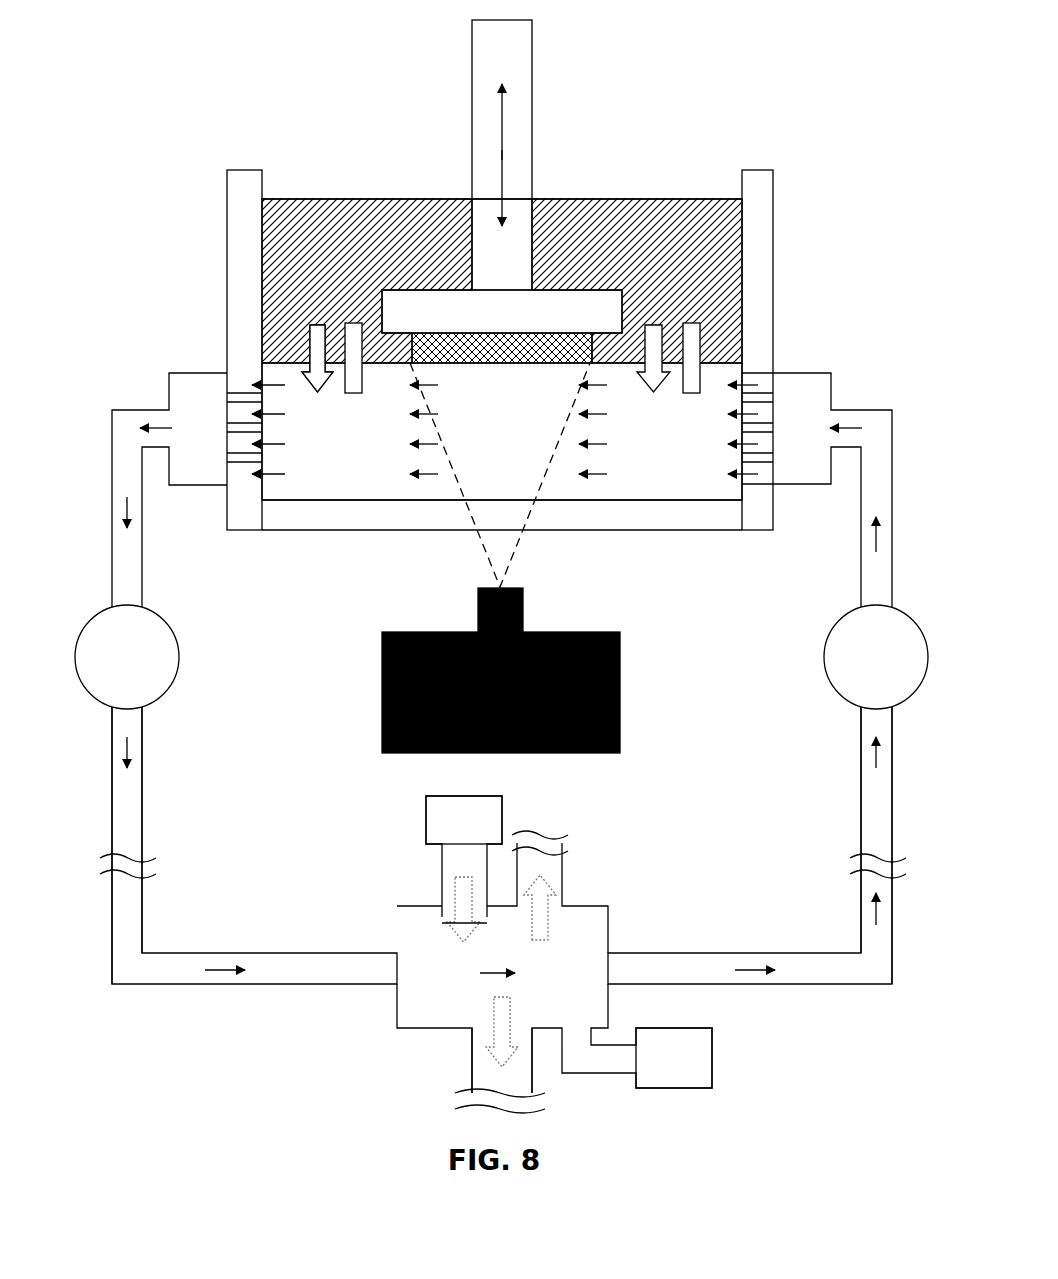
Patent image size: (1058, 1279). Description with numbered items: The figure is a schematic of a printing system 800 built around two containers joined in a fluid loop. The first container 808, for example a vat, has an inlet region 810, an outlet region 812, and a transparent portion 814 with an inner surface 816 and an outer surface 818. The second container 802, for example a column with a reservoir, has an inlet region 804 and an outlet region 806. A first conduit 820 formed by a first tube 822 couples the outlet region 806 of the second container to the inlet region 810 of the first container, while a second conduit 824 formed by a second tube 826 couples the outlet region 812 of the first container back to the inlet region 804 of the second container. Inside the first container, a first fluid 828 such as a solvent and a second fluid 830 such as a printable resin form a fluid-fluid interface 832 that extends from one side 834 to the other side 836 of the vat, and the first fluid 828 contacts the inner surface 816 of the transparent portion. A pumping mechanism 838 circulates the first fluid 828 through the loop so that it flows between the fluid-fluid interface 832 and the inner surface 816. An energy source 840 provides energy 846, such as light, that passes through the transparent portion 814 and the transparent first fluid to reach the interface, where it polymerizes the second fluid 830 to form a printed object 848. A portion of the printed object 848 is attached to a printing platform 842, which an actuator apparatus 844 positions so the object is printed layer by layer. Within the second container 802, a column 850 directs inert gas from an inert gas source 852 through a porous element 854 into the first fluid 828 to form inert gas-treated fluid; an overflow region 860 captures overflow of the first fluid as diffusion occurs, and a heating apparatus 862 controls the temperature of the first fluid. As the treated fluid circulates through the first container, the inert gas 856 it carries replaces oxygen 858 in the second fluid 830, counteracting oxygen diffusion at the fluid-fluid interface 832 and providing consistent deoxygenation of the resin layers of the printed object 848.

The system 800 is at (501, 566).
The second container 802 is at (608, 907).
The inlet region 804 is at (397, 970).
The outlet region 806 is at (608, 968).
The first container 808 is at (773, 215).
The inlet region 810 is at (765, 378).
The outlet region 812 is at (232, 378).
The transparent portion 814 is at (630, 522).
The inner surface 816 is at (322, 500).
The outer surface 818 is at (358, 530).
The first conduit 820 is at (880, 805).
The first tube 822 is at (892, 565).
The second conduit 824 is at (128, 803).
The second tube 826 is at (112, 560).
The first fluid 828 is at (690, 485).
The second fluid 830 is at (712, 265).
The fluid-fluid interface 832 is at (390, 370).
The side 834 is at (745, 235).
The side 836 is at (262, 250).
The pumping mechanism 838 is at (501, 657).
The energy source 840 is at (622, 693).
The printing platform 842 is at (423, 288).
The actuator apparatus 844 is at (535, 170).
The energy 846 is at (515, 557).
The printed object 848 is at (478, 350).
The column 850 is at (440, 880).
The inert gas source 852 is at (464, 820).
The porous element 854 is at (442, 923).
The inert gas 856 is at (352, 340).
The oxygen 858 is at (315, 340).
The overflow region 860 is at (472, 1043).
The heating apparatus 862 is at (674, 1058).